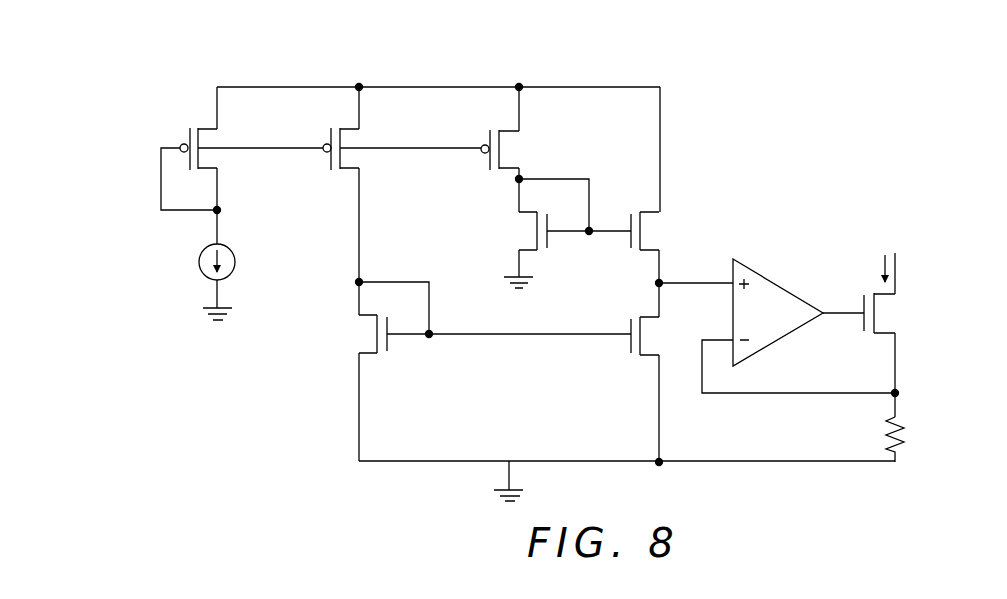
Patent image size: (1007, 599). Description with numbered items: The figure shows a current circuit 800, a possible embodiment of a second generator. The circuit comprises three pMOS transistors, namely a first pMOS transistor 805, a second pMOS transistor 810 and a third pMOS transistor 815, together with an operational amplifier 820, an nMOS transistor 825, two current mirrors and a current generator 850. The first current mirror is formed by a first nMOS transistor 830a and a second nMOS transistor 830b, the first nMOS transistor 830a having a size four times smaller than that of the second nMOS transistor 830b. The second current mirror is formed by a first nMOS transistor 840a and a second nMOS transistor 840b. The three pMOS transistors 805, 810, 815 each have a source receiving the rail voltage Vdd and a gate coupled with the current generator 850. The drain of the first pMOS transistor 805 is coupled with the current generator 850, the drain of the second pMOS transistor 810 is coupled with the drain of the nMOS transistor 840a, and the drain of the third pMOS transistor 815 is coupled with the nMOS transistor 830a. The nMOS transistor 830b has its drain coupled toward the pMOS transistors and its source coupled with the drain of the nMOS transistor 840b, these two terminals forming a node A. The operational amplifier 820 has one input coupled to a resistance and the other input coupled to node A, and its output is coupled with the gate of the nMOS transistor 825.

The current mirror circuit 800 is at (250, 66).
The first pMOS transistor 805 is at (190, 128).
The second pMOS transistor 810 is at (331, 172).
The third pMOS transistor 815 is at (489, 175).
The first nMOS transistor of first current mirror 830a is at (512, 253).
The second nMOS transistor of first current mirror 830b is at (630, 254).
The first nMOS transistor of second current mirror 840a is at (352, 354).
The second nMOS transistor of second current mirror 840b is at (630, 360).
The operational amplifier 820 is at (780, 338).
The nMOS transistor 825 is at (890, 313).
The current generator 850 is at (236, 258).